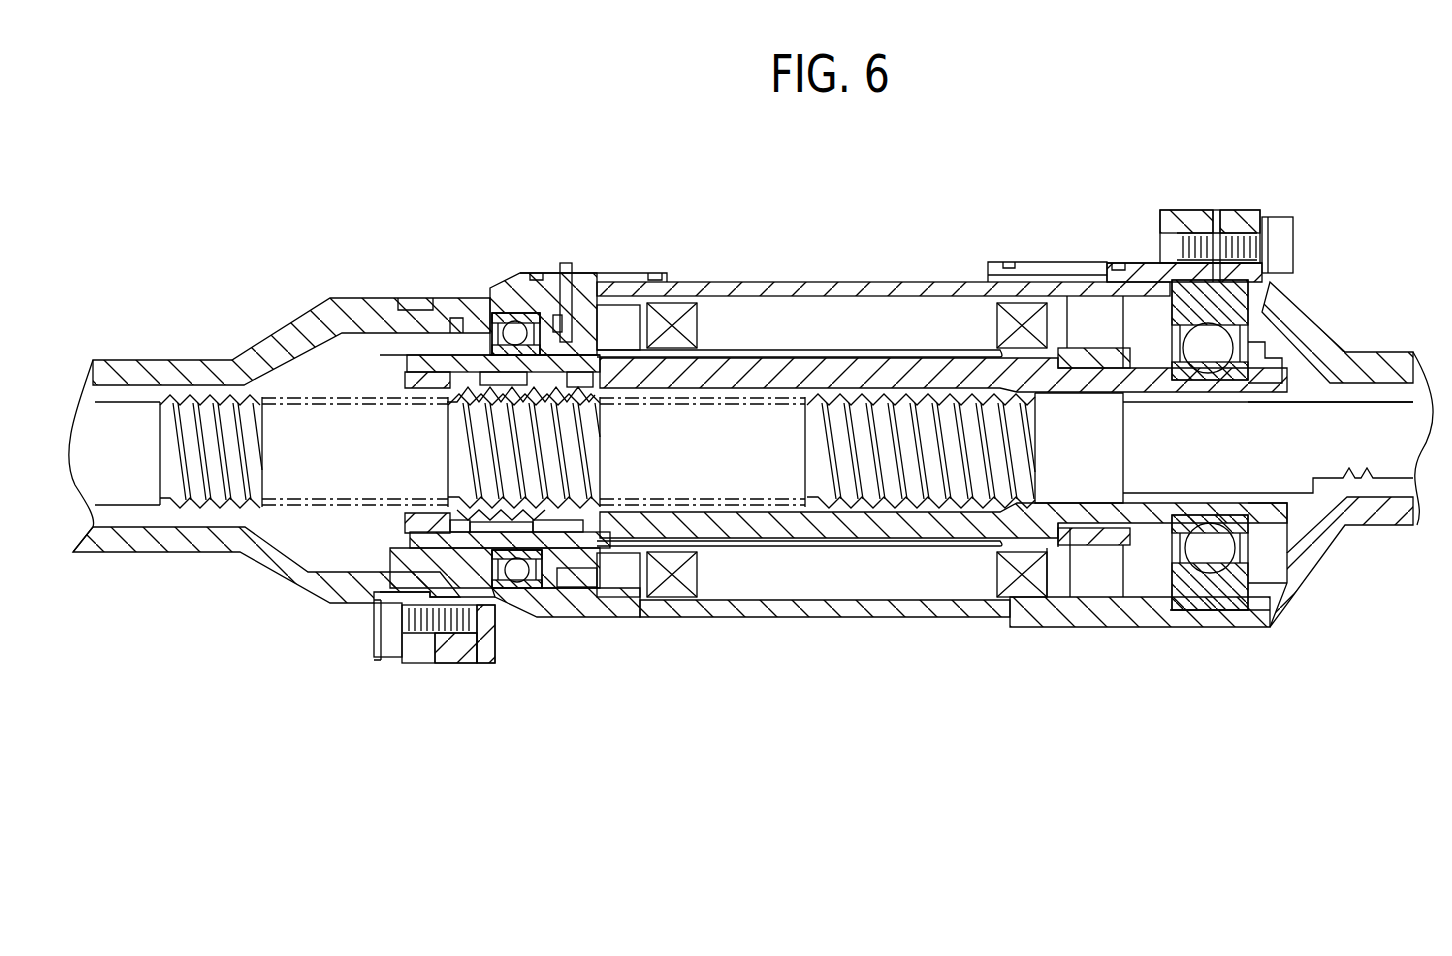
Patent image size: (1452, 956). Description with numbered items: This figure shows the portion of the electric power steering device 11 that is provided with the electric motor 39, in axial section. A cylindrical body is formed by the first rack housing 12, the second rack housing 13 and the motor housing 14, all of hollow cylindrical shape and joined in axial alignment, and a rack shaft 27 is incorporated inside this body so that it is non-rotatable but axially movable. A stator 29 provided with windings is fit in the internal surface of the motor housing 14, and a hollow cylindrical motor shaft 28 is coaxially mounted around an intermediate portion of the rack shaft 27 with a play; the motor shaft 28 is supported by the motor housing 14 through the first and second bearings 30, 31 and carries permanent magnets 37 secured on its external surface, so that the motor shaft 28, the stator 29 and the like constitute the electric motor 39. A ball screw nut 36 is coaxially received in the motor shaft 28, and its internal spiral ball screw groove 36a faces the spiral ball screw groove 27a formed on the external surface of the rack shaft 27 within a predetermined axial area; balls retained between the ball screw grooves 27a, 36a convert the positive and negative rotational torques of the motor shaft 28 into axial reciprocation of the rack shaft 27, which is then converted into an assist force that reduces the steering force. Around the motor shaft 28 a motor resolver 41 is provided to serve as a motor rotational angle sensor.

The electric power steering device 11 is at (1312, 119).
The first rack housing 12 is at (1320, 349).
The second rack housing 13 is at (287, 337).
The motor housing 14 is at (703, 297).
The rack shaft 27 is at (259, 541).
The ball screw groove 27a is at (182, 397).
The motor shaft 28 is at (897, 373).
The stator 29 is at (760, 310).
The first bearing 30 is at (522, 592).
The second bearing 31 is at (1250, 583).
The ball screw nut 36 is at (537, 527).
The ball screw groove 36a is at (405, 388).
The permanent magnets 37 is at (812, 360).
The electric motor 39 is at (942, 395).
The motor resolver 41 is at (1107, 560).